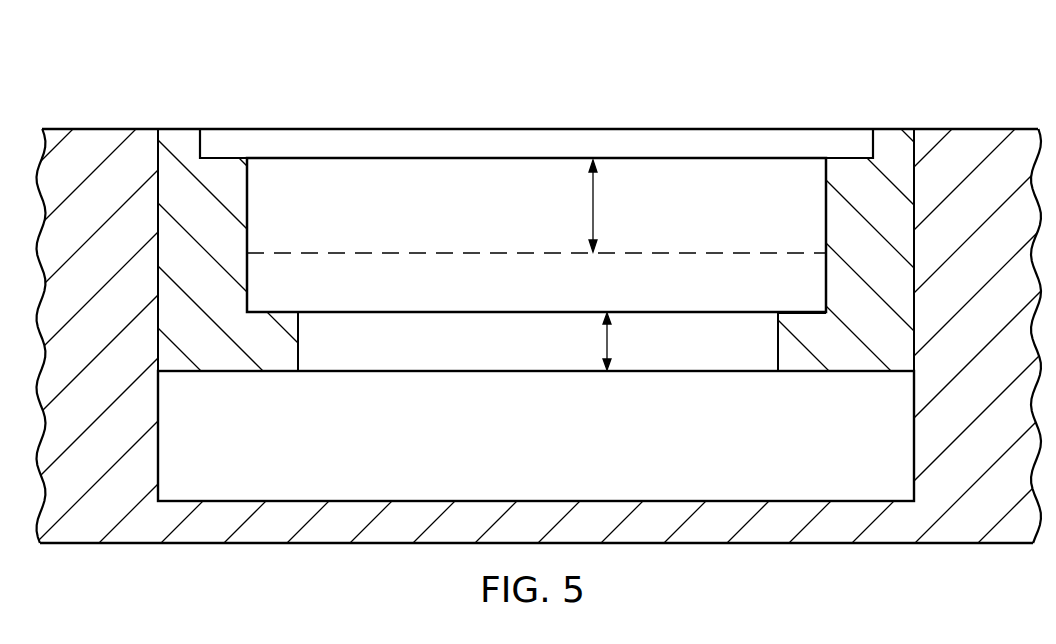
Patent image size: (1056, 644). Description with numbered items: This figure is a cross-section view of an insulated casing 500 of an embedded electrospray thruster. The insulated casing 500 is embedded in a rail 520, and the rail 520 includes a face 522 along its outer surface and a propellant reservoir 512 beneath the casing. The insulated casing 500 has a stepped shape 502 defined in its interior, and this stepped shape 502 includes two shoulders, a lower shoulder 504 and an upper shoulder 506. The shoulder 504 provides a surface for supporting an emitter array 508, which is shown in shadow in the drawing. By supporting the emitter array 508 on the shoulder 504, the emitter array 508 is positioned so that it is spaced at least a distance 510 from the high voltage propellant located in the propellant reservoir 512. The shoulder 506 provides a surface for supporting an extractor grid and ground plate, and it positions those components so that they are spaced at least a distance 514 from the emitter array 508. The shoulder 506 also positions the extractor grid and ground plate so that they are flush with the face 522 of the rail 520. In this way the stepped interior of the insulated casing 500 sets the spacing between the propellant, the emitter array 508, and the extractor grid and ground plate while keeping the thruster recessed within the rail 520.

The insulated casing 500 is at (850, 362).
The stepped shape 502 is at (740, 84).
The shoulder 504 is at (798, 312).
The shoulder 506 is at (223, 145).
The emitter array 508 is at (353, 291).
The distance 510 is at (607, 345).
The propellant reservoir 512 is at (558, 453).
The distance 514 is at (593, 205).
The rail 520 is at (265, 533).
The face 522 is at (101, 129).